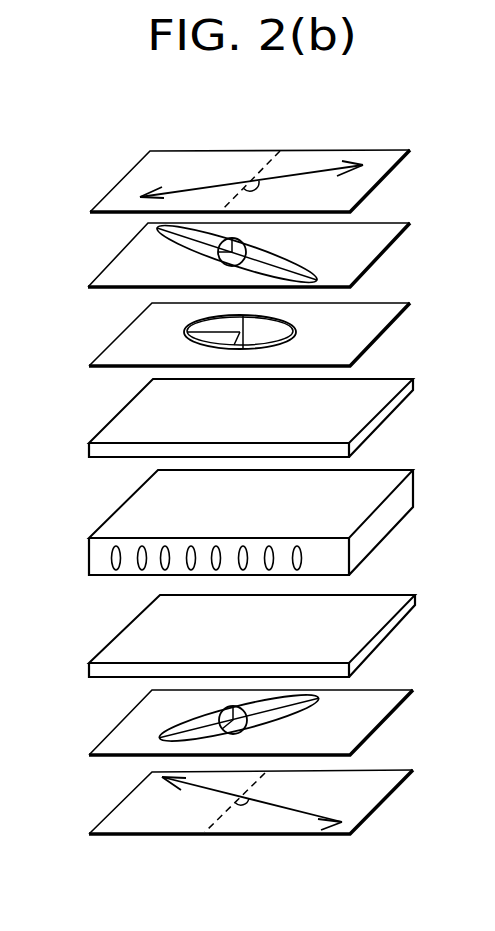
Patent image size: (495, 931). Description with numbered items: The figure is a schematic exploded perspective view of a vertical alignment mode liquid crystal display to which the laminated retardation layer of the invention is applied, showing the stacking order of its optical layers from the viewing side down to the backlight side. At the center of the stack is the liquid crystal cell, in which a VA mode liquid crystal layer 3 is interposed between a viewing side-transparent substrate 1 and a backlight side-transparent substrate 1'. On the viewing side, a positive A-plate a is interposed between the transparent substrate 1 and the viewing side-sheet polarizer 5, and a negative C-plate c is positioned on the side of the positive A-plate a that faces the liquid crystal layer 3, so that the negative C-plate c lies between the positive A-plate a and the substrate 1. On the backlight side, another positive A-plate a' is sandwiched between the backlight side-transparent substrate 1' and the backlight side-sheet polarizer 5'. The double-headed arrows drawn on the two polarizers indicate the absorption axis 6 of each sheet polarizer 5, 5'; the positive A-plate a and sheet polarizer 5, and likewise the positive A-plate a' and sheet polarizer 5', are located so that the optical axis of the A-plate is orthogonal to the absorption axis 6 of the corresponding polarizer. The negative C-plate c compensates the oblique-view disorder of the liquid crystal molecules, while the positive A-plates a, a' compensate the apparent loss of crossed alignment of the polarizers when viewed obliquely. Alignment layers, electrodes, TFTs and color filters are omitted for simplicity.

The sheet polarizer 5 is at (276, 181).
The absorption axis 6 is at (313, 172).
The positive A-plate a is at (275, 254).
The negative C-plate c is at (378, 325).
The viewing side-transparent substrate 1 is at (276, 418).
The liquid crystal layer 3 is at (400, 523).
The backlight side-transparent substrate 1' is at (280, 636).
The positive A-plate a' is at (279, 721).
The sheet polarizer 5' is at (280, 802).